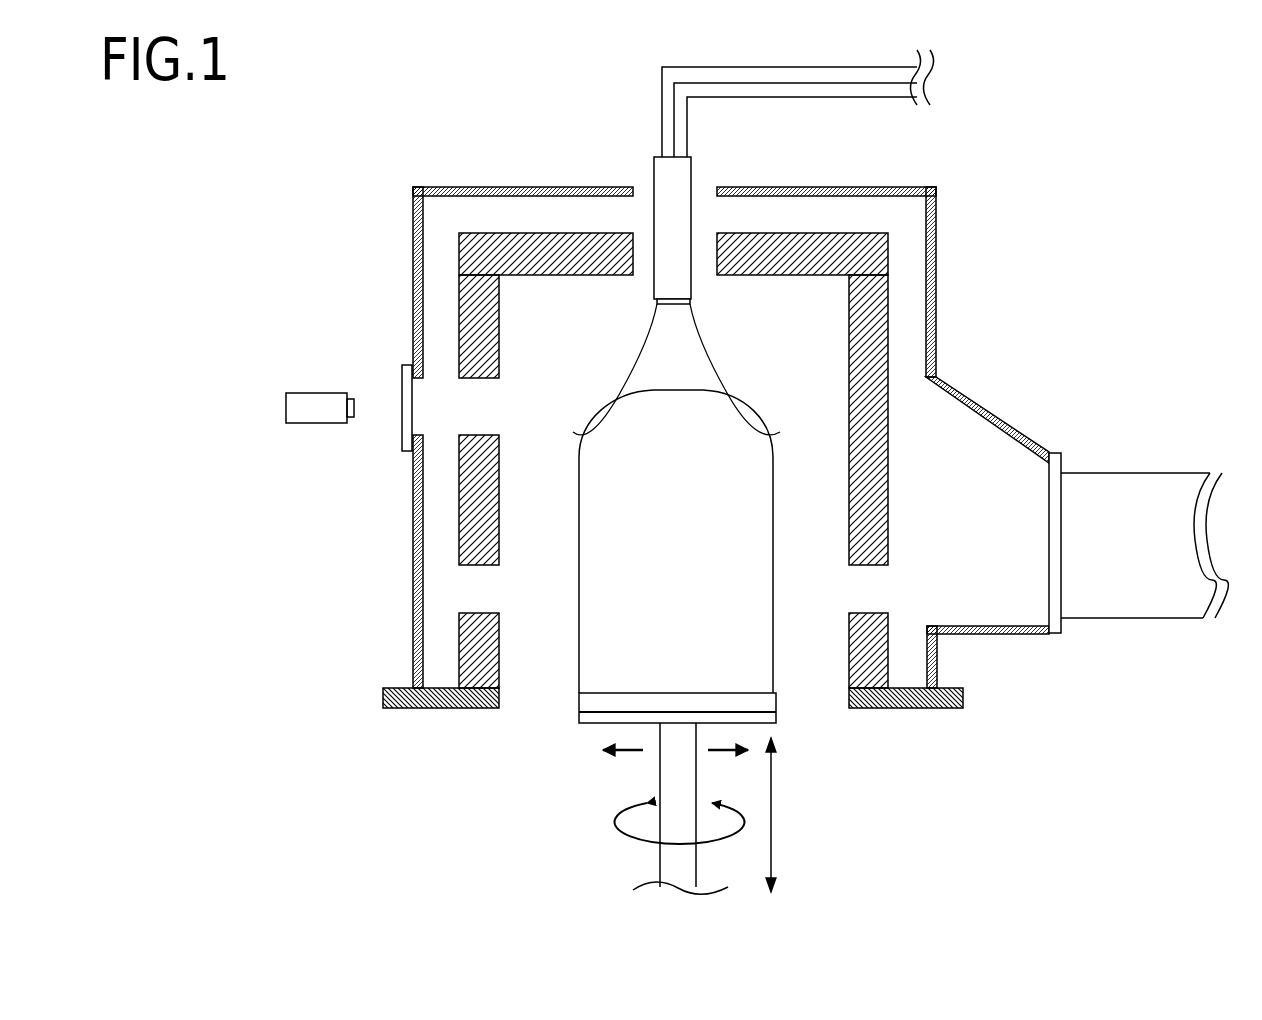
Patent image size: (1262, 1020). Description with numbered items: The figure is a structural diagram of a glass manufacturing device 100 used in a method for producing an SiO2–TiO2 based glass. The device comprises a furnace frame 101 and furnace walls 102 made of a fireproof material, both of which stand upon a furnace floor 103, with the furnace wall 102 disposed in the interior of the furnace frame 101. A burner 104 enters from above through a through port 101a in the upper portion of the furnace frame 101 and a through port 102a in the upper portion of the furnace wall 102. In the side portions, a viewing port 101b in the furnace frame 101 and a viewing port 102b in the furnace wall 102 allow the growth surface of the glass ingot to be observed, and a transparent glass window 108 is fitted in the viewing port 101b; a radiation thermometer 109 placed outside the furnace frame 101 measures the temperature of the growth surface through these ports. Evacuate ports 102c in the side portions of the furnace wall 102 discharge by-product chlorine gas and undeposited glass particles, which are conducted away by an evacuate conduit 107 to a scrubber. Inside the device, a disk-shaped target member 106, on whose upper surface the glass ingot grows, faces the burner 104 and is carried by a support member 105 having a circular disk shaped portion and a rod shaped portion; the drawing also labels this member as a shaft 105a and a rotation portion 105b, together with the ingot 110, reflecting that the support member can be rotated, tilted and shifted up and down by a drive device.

The manufacturing device 100 is at (1022, 128).
The furnace frame 101 is at (935, 343).
The through port 101a is at (647, 193).
The viewing port 101b is at (413, 380).
The furnace wall 102 is at (872, 453).
The through port 102a is at (643, 266).
The viewing port 102b is at (473, 400).
The evacuate port 102c is at (433, 610).
The furnace floor 103 is at (387, 708).
The burner 104 is at (682, 177).
The support member 105 is at (592, 806).
The shaft 105a is at (617, 718).
The rotation drive 105b is at (668, 740).
The target member 106 is at (760, 698).
The evacuate conduit 107 is at (1128, 487).
The transparent glass window 108 is at (411, 445).
The radiation thermometer 109 is at (302, 417).
The workpiece container 110 is at (758, 493).